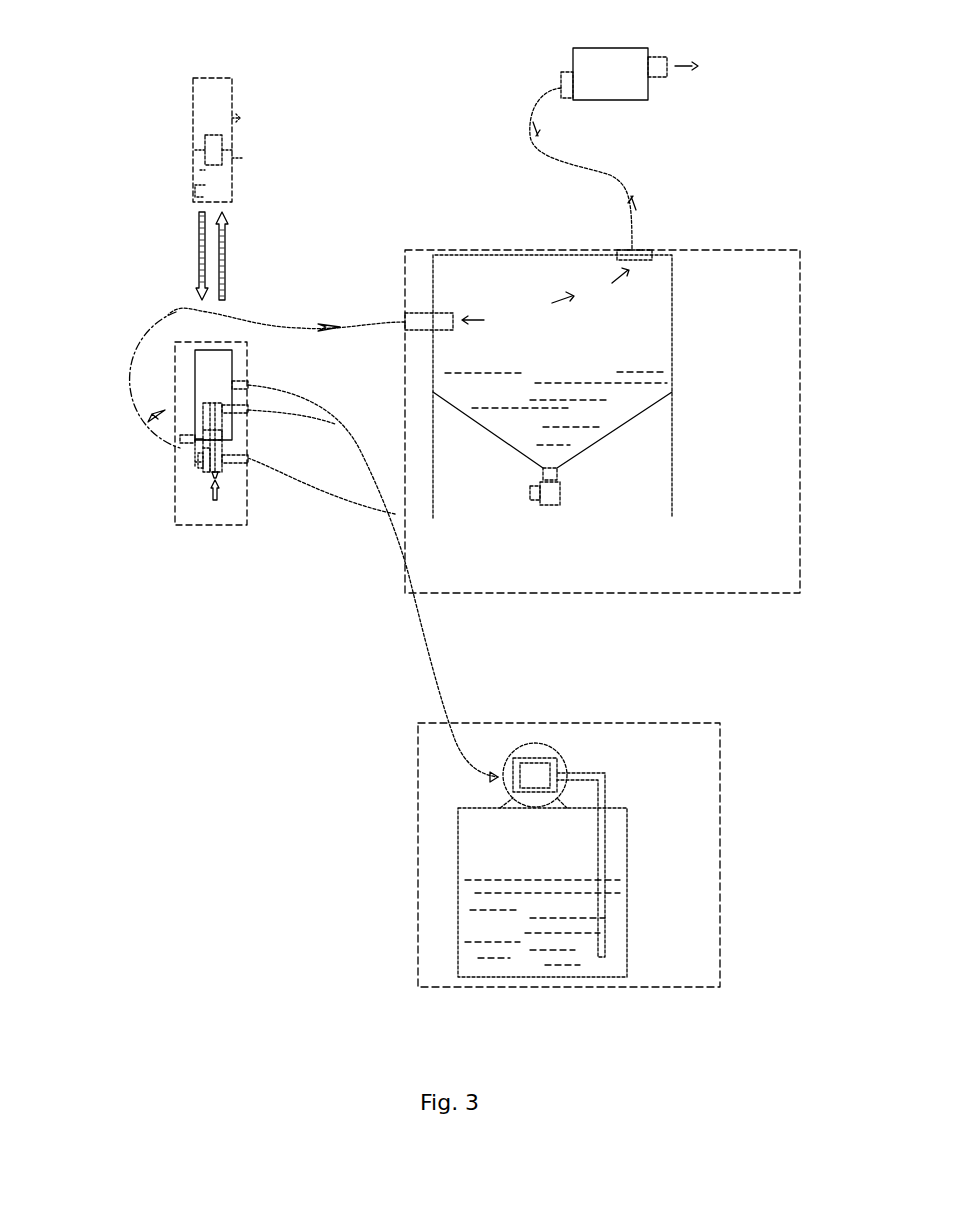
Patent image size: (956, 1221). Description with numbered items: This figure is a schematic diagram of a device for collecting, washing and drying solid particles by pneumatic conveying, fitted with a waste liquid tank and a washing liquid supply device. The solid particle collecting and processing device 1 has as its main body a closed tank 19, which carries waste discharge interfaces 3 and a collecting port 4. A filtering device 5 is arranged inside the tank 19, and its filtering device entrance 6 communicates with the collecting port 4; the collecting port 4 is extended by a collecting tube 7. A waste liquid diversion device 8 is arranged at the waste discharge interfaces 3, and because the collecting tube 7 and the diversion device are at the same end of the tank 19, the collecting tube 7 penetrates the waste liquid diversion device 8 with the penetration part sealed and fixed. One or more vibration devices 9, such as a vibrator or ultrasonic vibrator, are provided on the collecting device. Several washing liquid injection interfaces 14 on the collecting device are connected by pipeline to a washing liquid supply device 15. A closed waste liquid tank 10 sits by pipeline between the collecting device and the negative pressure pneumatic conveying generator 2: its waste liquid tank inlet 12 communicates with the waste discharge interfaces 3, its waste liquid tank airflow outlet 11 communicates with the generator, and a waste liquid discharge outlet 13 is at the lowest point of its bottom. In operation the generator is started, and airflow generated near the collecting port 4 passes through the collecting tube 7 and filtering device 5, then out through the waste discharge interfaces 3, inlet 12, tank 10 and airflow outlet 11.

The solid particle collecting and processing device 1 is at (181, 328).
The negative pressure pneumatic conveying generator 2 is at (585, 70).
The waste discharge interfaces 3 is at (187, 436).
The collecting port 4 is at (198, 459).
The filtering device 5 is at (213, 417).
The filtering device entrance 6 is at (218, 432).
The collecting tube 7 is at (215, 452).
The waste liquid diversion device 8 is at (205, 443).
The vibration device 9 is at (210, 456).
The waste liquid tank 10 is at (653, 619).
The waste liquid tank airflow outlet 11 is at (625, 250).
The waste liquid tank inlet 12 is at (404, 315).
The waste liquid discharge outlet 13 is at (557, 478).
The washing liquid injection interface 14 is at (248, 386).
The washing liquid supply device 15 is at (396, 958).
The tank 19 is at (195, 365).